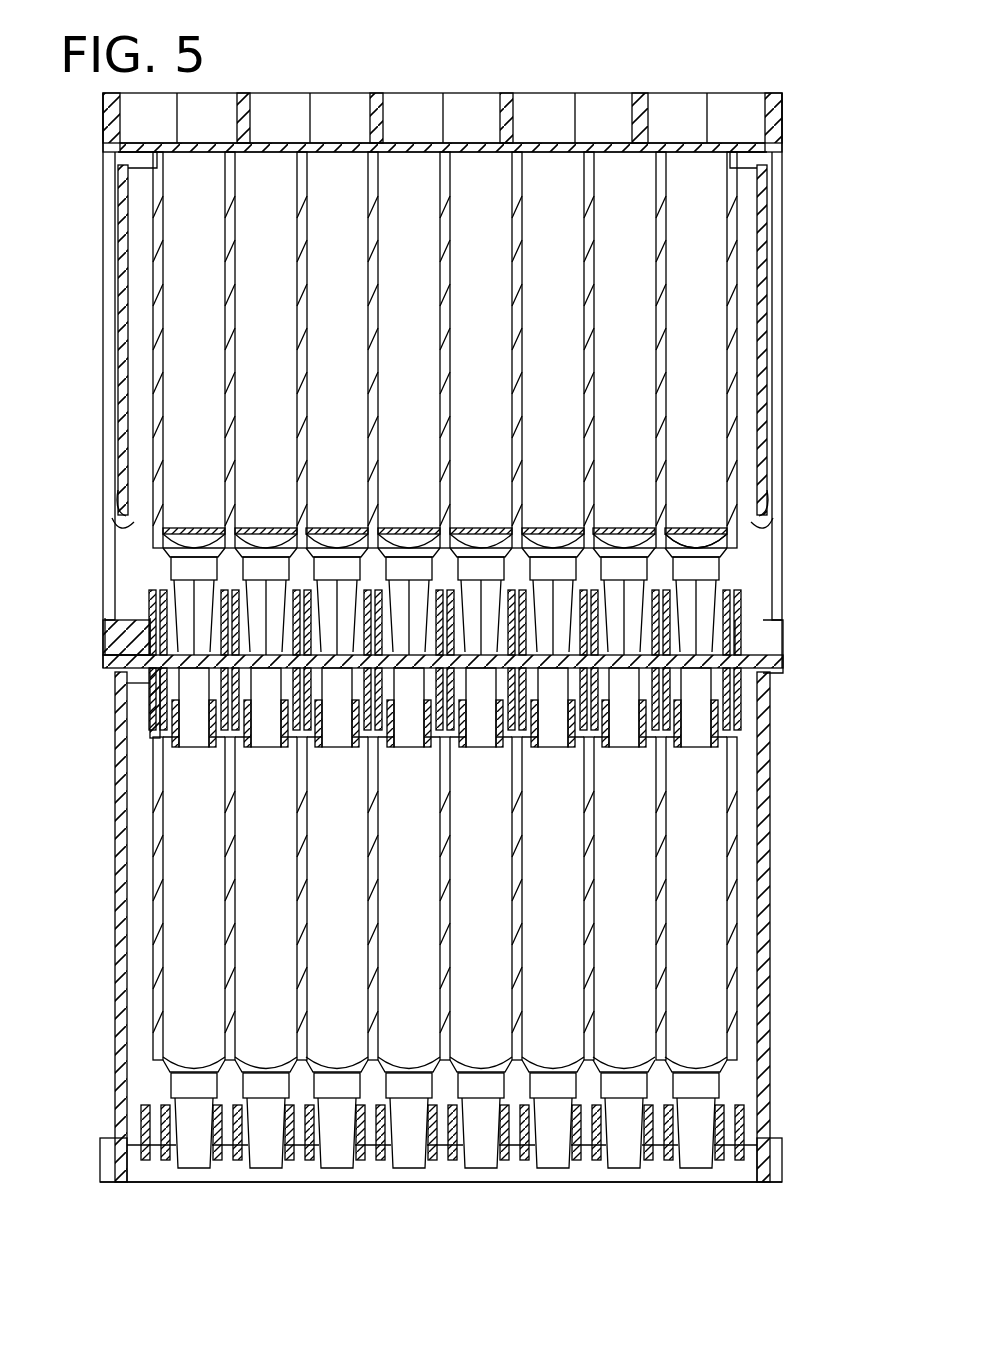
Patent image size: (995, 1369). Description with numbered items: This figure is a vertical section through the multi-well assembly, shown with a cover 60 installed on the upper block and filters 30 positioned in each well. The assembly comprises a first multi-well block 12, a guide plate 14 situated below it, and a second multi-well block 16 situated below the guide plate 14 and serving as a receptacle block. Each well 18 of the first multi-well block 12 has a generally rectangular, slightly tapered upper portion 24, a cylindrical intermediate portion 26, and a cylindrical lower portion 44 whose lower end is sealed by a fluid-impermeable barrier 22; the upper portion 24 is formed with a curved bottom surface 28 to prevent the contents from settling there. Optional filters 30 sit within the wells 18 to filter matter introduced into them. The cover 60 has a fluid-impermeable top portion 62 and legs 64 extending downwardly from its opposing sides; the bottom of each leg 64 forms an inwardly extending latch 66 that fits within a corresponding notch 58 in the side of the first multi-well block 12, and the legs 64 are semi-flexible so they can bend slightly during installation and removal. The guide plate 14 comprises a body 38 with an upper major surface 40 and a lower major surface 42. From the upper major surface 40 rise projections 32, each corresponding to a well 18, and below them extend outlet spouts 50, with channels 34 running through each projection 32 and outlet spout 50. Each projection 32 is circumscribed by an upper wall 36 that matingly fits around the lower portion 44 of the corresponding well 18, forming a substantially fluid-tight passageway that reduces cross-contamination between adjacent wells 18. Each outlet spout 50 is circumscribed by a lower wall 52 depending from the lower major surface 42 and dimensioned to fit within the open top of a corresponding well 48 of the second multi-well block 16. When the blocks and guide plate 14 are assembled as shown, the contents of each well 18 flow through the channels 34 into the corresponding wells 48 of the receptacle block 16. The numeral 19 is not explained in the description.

The first multi-well block 12 is at (780, 370).
The guide plate 14 is at (780, 660).
The second multi-well block 16 is at (777, 828).
The well 18 is at (695, 185).
The support ribs 19 is at (730, 615).
The fluid-impermeable barrier 22 is at (700, 1175).
The upper portion 24 is at (190, 255).
The intermediate portion 26 is at (735, 628).
The curved bottom surface 28 is at (708, 548).
The filter 30 is at (170, 526).
The projection 32 is at (268, 530).
The channel 34 is at (202, 540).
The upper wall 36 is at (160, 605).
The body 38 is at (115, 665).
The upper major surface 40 is at (115, 620).
The lower major surface 42 is at (135, 702).
The lower portion 44 is at (710, 570).
The well 48 is at (697, 898).
The outlet spout 50 is at (258, 750).
The lower wall 52 is at (216, 748).
The notch 58 is at (118, 518).
The cover 60 is at (790, 108).
The top portion 62 is at (506, 94).
The leg 64 is at (118, 340).
The latch 66 is at (122, 510).